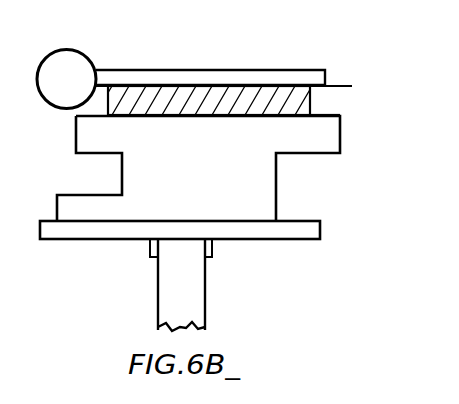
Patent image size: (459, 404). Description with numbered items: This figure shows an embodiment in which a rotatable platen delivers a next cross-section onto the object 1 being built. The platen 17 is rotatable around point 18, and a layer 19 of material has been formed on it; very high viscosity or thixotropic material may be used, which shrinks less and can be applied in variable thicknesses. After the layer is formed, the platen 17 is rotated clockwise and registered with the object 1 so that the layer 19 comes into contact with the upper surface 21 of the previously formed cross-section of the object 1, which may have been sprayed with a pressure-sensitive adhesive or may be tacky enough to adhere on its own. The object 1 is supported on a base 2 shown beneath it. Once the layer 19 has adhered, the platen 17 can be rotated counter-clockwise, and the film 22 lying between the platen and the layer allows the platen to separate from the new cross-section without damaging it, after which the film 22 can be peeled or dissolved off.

The object 1 is at (330, 140).
The base plate 2 is at (320, 226).
The platen 17 is at (166, 71).
The rotation point 18 is at (83, 48).
The layer 19 is at (318, 93).
The upper surface of previously formed cross-section 21 is at (330, 109).
The film 22 is at (333, 85).